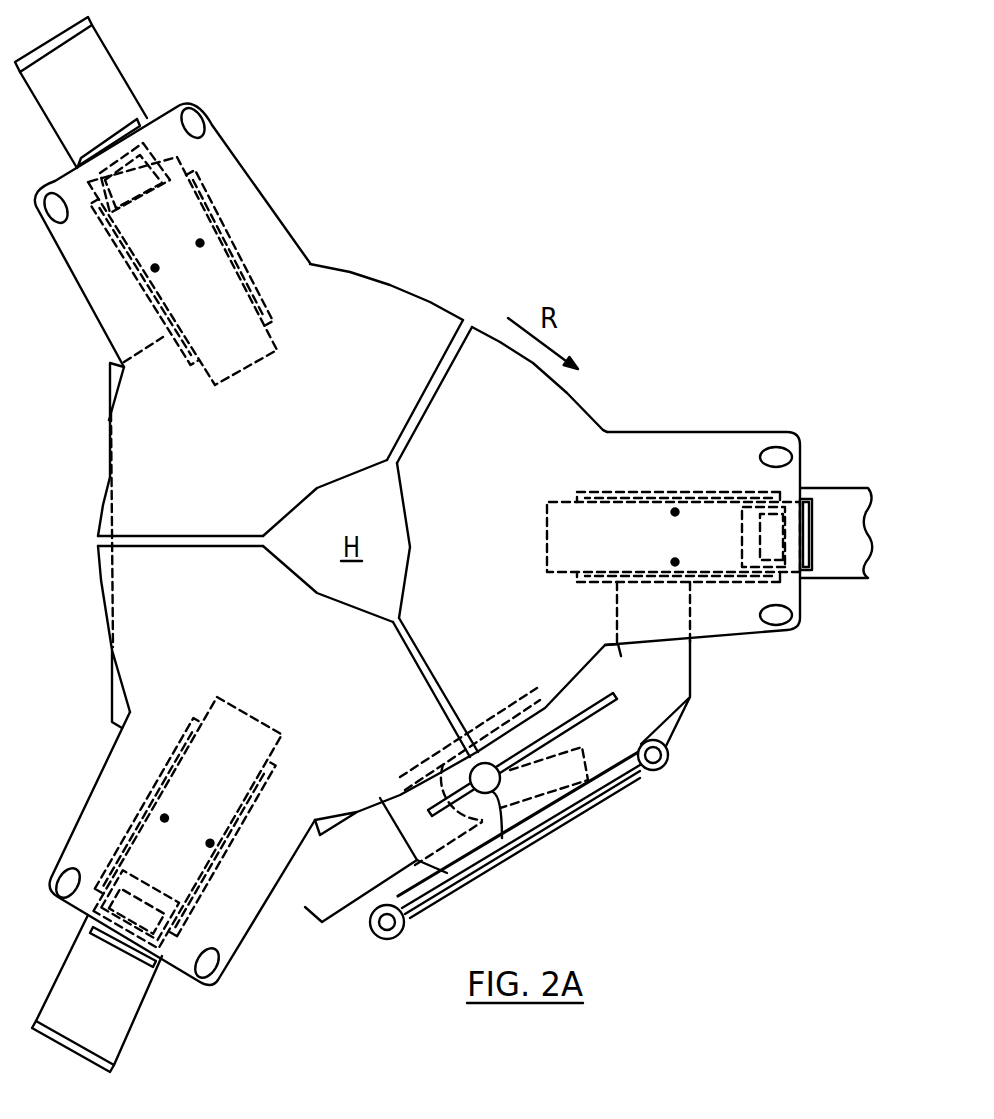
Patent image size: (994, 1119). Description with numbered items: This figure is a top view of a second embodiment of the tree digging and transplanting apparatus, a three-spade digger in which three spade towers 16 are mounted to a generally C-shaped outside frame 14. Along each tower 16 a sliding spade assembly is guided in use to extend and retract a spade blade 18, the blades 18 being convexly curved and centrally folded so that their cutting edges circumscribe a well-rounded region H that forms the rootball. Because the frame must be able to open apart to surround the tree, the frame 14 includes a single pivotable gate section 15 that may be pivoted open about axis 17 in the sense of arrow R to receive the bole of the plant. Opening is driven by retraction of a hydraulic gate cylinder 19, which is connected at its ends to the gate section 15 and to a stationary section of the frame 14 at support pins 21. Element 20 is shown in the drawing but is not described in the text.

The outside frame 14 is at (110, 477).
The pivotable gate section 15 is at (669, 686).
The spade tower 16 is at (858, 493).
The axis 17 is at (503, 840).
The spade blade 18 is at (98, 503).
The hydraulic gate cylinder 19 is at (567, 828).
The bracket 20 is at (810, 512).
The support pin 21 is at (663, 772).